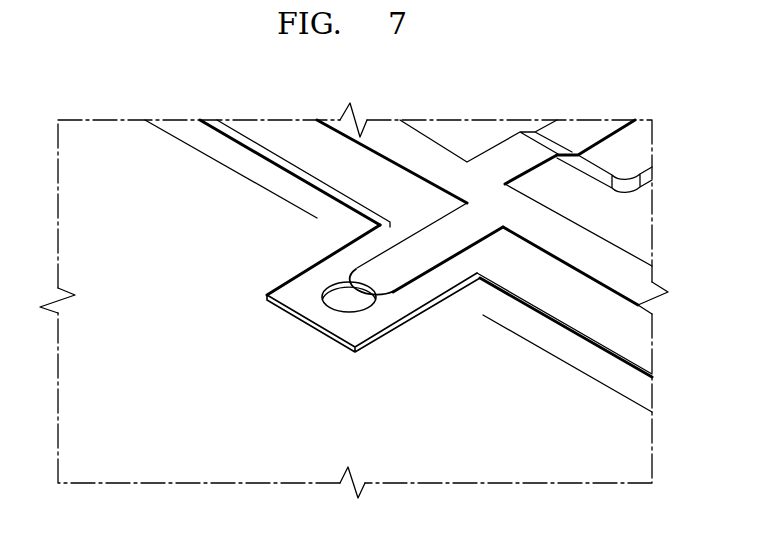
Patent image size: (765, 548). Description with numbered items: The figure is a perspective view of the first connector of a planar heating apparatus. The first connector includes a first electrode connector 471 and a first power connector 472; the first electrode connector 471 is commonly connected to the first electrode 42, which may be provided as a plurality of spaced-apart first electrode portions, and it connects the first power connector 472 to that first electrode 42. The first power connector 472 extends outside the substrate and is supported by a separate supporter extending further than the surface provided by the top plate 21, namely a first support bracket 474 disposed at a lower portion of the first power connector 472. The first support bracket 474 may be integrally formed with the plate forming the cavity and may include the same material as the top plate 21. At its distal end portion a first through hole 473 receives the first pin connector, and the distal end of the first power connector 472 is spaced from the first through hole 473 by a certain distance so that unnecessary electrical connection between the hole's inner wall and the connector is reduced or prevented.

The top plate 21 is at (612, 330).
The first electrode 42 is at (507, 157).
The first electrode connector 471 is at (563, 243).
The first power connector 472 is at (418, 258).
The first through hole 473 is at (347, 302).
The first support bracket 474 is at (266, 293).